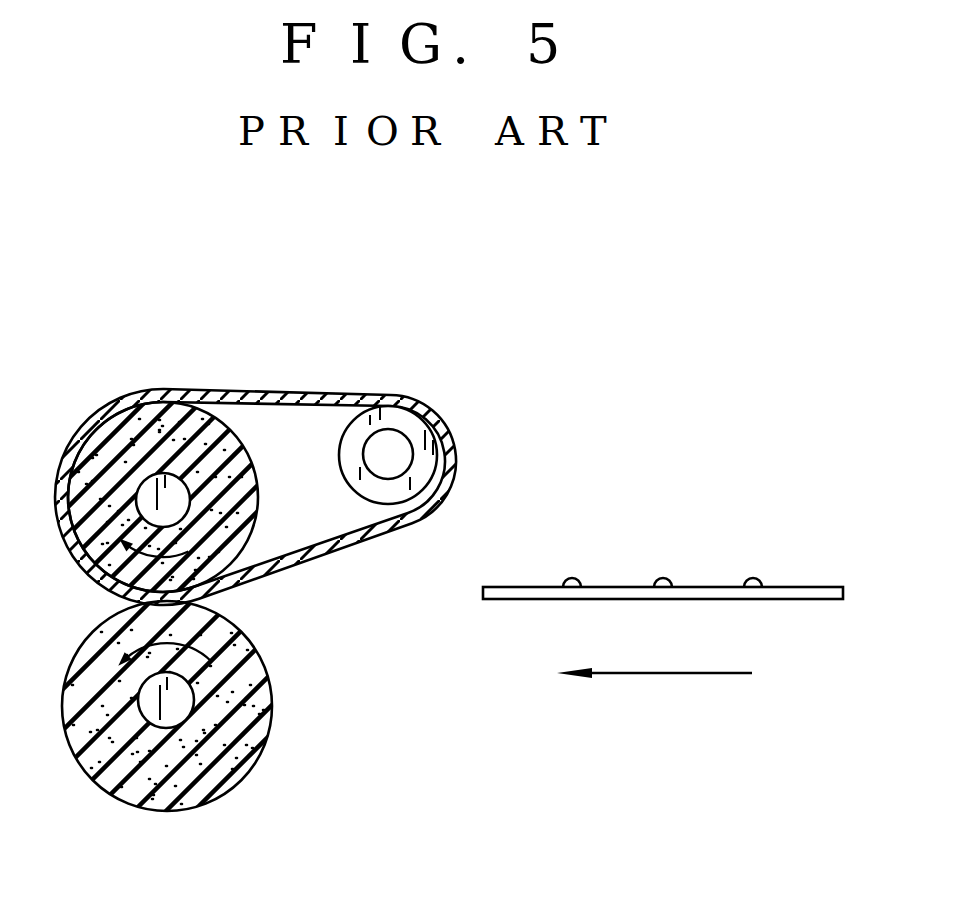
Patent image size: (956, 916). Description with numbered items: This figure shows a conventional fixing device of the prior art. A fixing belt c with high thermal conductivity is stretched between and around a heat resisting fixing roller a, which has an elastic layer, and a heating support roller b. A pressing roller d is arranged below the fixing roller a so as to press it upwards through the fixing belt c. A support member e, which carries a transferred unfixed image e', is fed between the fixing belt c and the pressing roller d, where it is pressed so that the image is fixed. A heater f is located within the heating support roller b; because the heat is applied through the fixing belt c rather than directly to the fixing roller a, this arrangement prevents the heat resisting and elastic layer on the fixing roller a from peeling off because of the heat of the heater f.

The fixing roller a is at (152, 432).
The heating support roller b is at (384, 414).
The fixing belt c is at (288, 397).
The pressing roller d is at (273, 704).
The support member e is at (663, 632).
The unfixed image e' is at (662, 515).
The heater f is at (397, 443).